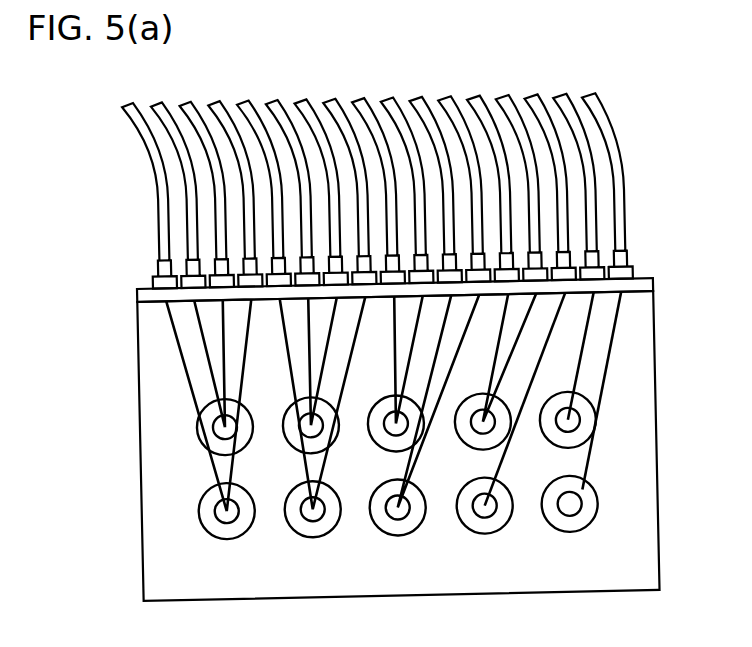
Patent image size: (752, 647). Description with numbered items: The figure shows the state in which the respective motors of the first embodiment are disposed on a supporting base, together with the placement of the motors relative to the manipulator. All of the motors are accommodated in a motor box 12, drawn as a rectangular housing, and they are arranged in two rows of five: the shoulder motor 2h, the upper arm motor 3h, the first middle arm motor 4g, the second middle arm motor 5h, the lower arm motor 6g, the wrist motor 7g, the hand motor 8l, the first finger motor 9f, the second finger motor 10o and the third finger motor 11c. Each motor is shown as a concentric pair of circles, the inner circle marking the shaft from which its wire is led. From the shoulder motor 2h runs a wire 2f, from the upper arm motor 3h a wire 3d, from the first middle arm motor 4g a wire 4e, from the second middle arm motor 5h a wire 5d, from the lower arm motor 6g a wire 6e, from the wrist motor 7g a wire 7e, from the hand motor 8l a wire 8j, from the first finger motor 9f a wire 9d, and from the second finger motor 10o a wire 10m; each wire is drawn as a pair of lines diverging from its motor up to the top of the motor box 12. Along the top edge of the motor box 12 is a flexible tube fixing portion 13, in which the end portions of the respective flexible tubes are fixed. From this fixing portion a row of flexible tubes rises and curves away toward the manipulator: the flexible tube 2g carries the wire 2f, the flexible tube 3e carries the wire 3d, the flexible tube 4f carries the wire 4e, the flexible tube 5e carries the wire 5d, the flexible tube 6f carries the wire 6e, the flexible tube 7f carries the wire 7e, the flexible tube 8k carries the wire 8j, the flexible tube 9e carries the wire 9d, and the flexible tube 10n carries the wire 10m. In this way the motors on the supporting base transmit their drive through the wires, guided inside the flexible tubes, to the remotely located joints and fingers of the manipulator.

The motor box 12 is at (154, 568).
The flexible tube fixing portion 13 is at (148, 296).
The flexible tube 2g is at (155, 184).
The flexible tube 3e is at (221, 120).
The flexible tube 4f is at (279, 120).
The flexible tube 5e is at (337, 121).
The flexible tube 6f is at (392, 120).
The flexible tube 7f is at (452, 119).
The flexible tube 8k is at (507, 118).
The flexible tube 9e is at (542, 126).
The flexible tube 10n is at (583, 156).
The wire 2f is at (224, 482).
The wire 3d is at (241, 375).
The wire 4e is at (298, 466).
The wire 5d is at (349, 352).
The wire 6e is at (411, 371).
The wire 7e is at (398, 466).
The wire 8j is at (528, 313).
The wire 9d is at (549, 359).
The wire 10m is at (583, 384).
The shoulder motor 2h is at (212, 539).
The upper arm motor 3h is at (197, 426).
The first middle arm motor 4g is at (303, 539).
The second middle arm motor 5h is at (287, 443).
The lower arm motor 6g is at (375, 445).
The wrist motor 7g is at (397, 538).
The hand motor 8l is at (497, 445).
The first finger motor 9f is at (480, 543).
The second finger motor 10o is at (584, 442).
The third finger motor 11c is at (572, 536).